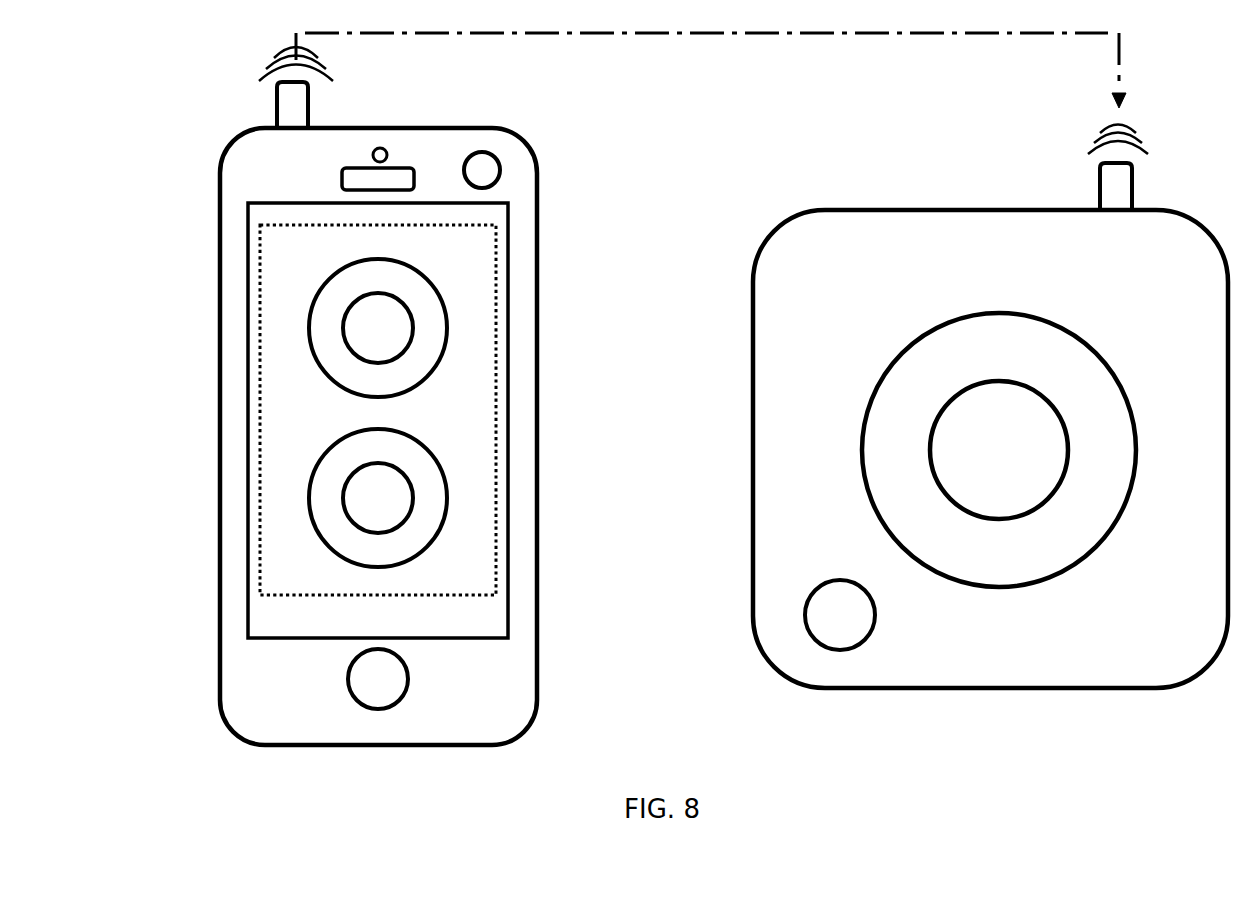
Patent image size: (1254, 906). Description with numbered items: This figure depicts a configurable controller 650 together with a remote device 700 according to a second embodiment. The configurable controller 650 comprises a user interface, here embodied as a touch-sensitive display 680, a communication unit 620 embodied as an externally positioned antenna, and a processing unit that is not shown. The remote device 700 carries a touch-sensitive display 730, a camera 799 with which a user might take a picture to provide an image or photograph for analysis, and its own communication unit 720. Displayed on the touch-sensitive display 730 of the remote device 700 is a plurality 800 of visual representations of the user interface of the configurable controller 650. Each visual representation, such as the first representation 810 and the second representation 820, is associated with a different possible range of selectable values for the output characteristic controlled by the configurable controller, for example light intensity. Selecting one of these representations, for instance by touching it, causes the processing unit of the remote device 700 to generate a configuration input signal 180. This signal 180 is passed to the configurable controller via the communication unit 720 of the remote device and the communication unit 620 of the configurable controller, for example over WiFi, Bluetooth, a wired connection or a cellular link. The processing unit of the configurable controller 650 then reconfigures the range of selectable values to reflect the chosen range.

The configuration input signal 180 is at (747, 33).
The communication unit 620 is at (1132, 185).
The configurable controller 650 is at (958, 210).
The user interface arrangement 680 is at (1083, 561).
The remote device 700 is at (537, 368).
The communication unit 720 is at (275, 102).
The touch-sensitive display 730 is at (505, 307).
The camera 799 is at (500, 165).
The plurality of visual representations 800 is at (496, 517).
The first representation 810 is at (313, 300).
The second representation 820 is at (310, 498).